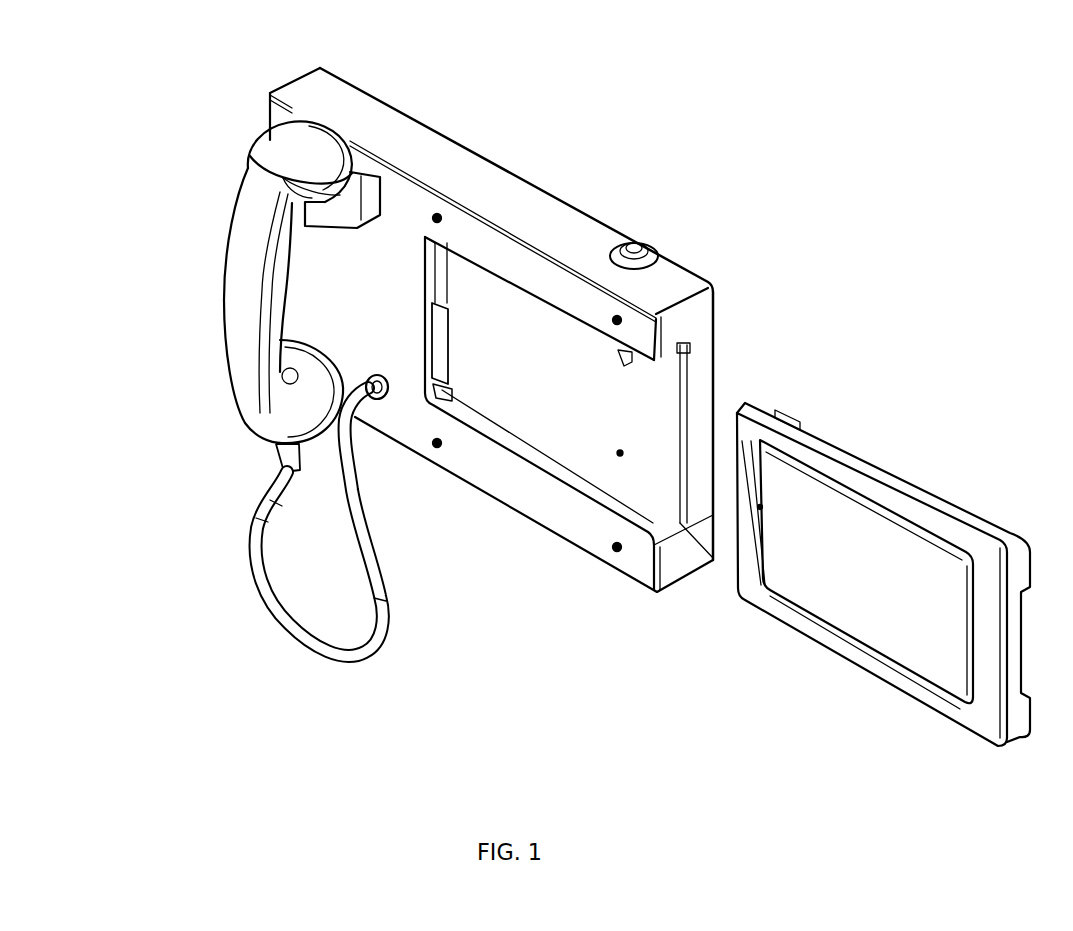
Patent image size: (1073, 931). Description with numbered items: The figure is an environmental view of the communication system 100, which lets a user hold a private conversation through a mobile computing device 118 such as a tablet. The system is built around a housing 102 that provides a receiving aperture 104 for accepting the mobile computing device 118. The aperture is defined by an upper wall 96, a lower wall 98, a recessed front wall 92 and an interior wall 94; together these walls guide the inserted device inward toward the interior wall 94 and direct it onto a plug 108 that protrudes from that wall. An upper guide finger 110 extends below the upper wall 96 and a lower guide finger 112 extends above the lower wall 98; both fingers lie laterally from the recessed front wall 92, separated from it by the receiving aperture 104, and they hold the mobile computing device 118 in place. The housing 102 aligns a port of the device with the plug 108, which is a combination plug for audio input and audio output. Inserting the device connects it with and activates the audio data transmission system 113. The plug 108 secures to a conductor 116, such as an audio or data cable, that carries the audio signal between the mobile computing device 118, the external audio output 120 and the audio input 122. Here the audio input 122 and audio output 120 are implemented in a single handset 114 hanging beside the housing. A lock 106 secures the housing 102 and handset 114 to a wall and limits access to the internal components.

The recessed front wall 92 is at (658, 423).
The interior wall 94 is at (450, 400).
The upper wall 96 is at (708, 305).
The lower wall 98 is at (662, 555).
The communication system 100 is at (608, 215).
The housing 102 is at (483, 160).
The receiving aperture 104 is at (647, 393).
The lock 106 is at (645, 247).
The plug 108 is at (450, 400).
The upper guide finger 110 is at (523, 290).
The lower guide finger 112 is at (560, 495).
The audio data transmission system 113 is at (252, 240).
The handset 114 is at (233, 318).
The conductor 116 is at (381, 392).
The mobile computing device 118 is at (915, 497).
The external audio output 120 is at (340, 148).
The audio input 122 is at (322, 387).